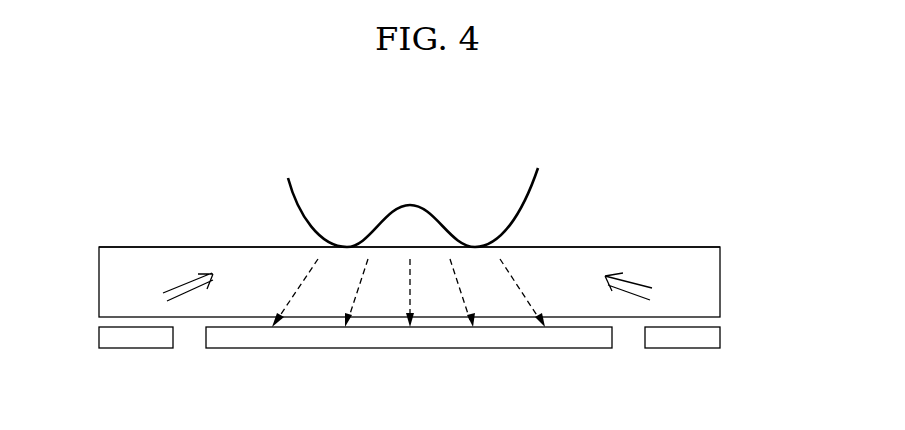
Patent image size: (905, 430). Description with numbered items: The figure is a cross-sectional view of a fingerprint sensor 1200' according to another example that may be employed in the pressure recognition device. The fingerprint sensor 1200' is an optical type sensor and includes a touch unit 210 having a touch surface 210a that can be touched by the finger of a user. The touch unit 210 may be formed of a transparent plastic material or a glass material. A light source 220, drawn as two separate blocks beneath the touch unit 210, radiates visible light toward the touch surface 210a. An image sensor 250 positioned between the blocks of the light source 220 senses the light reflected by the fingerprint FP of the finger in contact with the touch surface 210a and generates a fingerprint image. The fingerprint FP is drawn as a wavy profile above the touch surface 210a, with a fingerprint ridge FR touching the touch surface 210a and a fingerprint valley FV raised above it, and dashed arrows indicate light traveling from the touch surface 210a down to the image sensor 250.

The fingerprint sensor 1200' is at (709, 128).
The touch unit 210 is at (712, 280).
The touch surface 210a is at (688, 247).
The light source 220 is at (131, 349).
The image sensor 250 is at (410, 349).
The fingerprint FP is at (527, 180).
The fingerprint valley FV is at (411, 205).
The fingerprint ridge FR is at (349, 246).